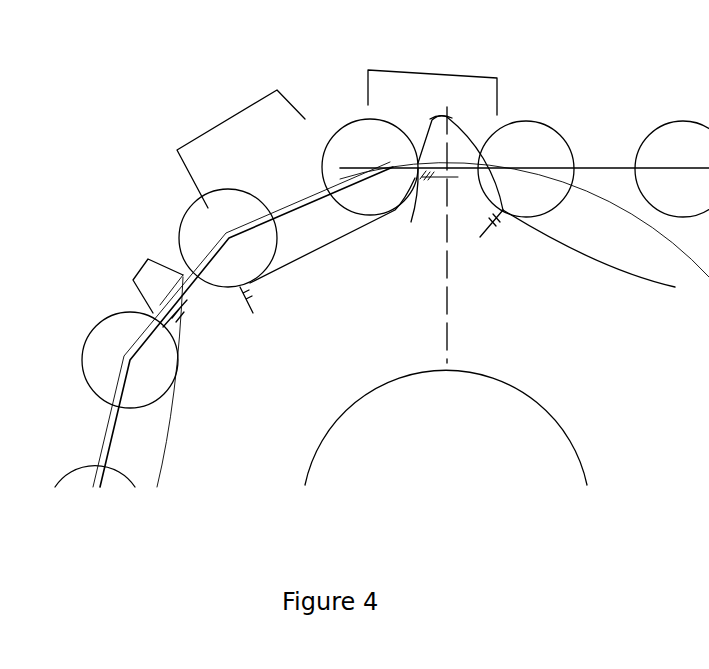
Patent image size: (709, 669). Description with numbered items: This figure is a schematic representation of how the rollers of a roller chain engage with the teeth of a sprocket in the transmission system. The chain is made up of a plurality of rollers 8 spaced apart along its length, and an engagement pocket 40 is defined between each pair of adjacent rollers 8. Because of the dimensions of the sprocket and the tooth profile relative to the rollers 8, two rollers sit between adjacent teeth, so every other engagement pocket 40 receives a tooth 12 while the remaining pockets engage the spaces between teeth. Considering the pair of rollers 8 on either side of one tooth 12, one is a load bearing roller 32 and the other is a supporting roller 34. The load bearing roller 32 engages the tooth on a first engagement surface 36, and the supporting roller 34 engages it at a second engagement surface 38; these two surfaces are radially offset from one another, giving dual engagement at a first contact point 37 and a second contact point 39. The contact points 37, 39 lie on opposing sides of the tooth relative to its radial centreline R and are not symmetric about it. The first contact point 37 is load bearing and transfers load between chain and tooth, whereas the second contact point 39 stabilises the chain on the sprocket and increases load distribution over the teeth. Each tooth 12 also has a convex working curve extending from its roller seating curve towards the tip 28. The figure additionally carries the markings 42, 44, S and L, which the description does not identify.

The roller 8 is at (342, 150).
The tooth 12 is at (460, 163).
The tip 28 is at (443, 119).
The load bearing roller 32 is at (383, 157).
The supporting roller 34 is at (539, 159).
The first engagement surface 36 is at (411, 208).
The first contact point 37 is at (348, 235).
The second engagement surface 38 is at (503, 210).
The second contact point 39 is at (589, 261).
The engagement pocket 40 is at (337, 123).
The belt guide 42 is at (165, 286).
The belt path 44 is at (292, 200).
The radial centreline R is at (451, 330).
The straight belt section S is at (380, 202).
The belt link L is at (196, 259).